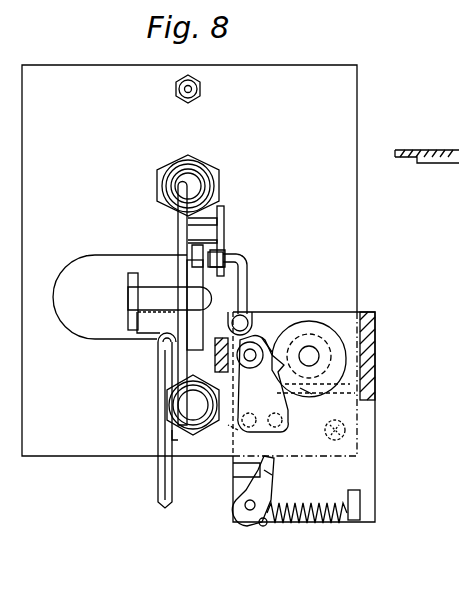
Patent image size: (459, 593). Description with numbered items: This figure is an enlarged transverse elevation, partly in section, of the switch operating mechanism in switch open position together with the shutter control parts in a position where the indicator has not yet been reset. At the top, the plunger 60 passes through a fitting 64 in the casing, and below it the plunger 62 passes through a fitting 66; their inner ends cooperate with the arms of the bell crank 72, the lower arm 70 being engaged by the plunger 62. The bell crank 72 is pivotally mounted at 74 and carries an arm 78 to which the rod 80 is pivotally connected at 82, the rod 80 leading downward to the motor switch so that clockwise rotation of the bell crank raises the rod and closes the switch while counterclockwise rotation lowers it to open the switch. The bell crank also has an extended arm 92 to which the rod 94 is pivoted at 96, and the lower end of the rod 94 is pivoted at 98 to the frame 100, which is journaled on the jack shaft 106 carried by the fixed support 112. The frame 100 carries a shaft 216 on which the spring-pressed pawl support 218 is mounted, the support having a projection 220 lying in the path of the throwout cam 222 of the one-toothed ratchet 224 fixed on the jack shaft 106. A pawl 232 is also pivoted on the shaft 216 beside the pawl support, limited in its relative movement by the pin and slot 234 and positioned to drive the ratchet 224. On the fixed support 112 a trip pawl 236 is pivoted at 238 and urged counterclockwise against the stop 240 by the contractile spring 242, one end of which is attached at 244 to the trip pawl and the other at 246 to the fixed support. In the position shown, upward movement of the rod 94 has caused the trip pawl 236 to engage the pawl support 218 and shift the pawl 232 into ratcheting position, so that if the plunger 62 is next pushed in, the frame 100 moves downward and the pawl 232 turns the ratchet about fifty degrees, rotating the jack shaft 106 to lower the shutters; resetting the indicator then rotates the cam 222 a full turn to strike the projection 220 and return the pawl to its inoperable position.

The plunger 60 is at (198, 184).
The plunger 62 is at (190, 405).
The fitting 64 is at (217, 178).
The fitting 66 is at (170, 432).
The lower arm of bell crank 70 is at (177, 358).
The bell crank 72 is at (178, 266).
The pivot 74 is at (128, 290).
The arm 78 is at (127, 312).
The rod 80 is at (165, 472).
The pivot 82 is at (158, 331).
The extended arm 92 is at (224, 220).
The rod 94 is at (247, 268).
The pivot 96 is at (226, 254).
The pivot 98 is at (247, 308).
The frame 100 is at (252, 336).
The jack shaft 106 is at (372, 312).
The fixed support 112 is at (366, 462).
The shaft 216 is at (262, 340).
The pawl support 218 is at (268, 409).
The projection 220 is at (316, 320).
The throwout cam 222 is at (334, 347).
The one-toothed ratchet 224 is at (346, 360).
The pawl 232 is at (302, 392).
The pin and slot 234 is at (232, 428).
The trip pawl 236 is at (272, 470).
The pivot 238 is at (262, 518).
The stop 240 is at (243, 470).
The contractile spring 242 is at (296, 524).
The spring connection 244 is at (262, 527).
The spring connection 246 is at (352, 521).